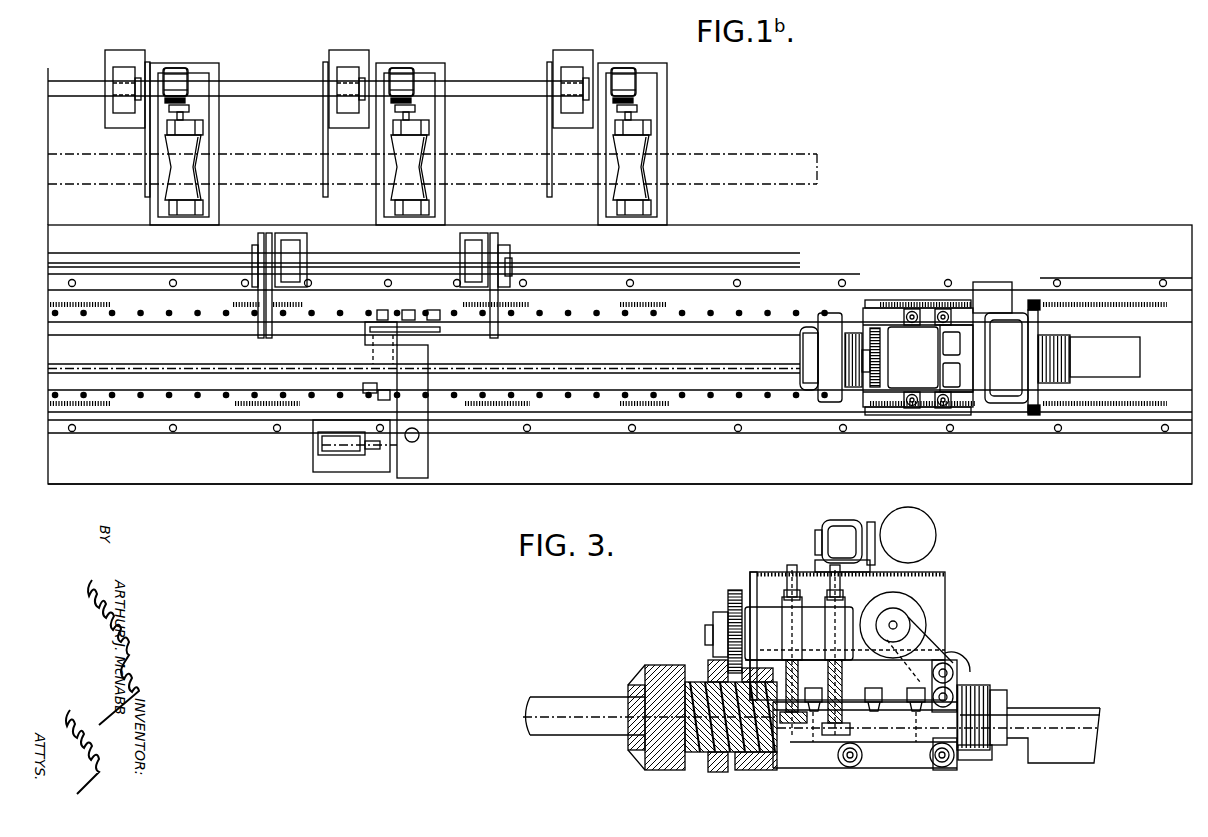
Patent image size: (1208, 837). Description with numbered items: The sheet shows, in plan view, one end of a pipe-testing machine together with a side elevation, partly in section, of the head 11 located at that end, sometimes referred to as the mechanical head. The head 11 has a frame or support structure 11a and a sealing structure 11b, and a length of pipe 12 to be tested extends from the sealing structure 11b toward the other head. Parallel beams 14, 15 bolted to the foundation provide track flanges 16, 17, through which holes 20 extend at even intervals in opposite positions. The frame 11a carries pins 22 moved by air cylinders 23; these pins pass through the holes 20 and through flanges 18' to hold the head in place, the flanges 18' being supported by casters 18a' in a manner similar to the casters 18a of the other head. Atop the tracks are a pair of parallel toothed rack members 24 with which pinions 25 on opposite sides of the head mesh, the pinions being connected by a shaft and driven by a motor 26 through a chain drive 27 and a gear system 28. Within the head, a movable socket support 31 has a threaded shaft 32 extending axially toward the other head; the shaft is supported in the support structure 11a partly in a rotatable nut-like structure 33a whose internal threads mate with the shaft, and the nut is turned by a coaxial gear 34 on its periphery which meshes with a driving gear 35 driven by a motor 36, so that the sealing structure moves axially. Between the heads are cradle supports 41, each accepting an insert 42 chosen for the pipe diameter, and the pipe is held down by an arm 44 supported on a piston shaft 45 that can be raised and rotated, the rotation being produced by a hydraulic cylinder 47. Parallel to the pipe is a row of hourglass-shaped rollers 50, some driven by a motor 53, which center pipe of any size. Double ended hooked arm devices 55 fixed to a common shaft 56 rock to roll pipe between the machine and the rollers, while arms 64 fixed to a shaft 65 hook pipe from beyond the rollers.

In FIG. 1b, the head 11 is at (978, 402).
In FIG. 3, the head 11 is at (735, 577).
In FIG. 1b, the frame or support structure 11a is at (898, 317).
In FIG. 3, the frame or support structure 11a is at (905, 764).
In FIG. 1b, the sealing structure 11b is at (828, 327).
In FIG. 3, the sealing structure 11b is at (660, 663).
In FIG. 1b, the pipe 12 is at (275, 153).
In FIG. 3, the pipe 12 is at (542, 697).
In FIG. 1b, the beam 14 is at (240, 426).
In FIG. 3, the beam 14 is at (1058, 752).
In FIG. 1b, the beam 15 is at (569, 285).
In FIG. 1b, the track flange 16 is at (613, 393).
In FIG. 1b, the track flange 17 is at (662, 317).
In FIG. 3, the flange 18' is at (865, 688).
In FIG. 3, the roller or caster 18a is at (865, 747).
In FIG. 3, the caster 18a' is at (870, 736).
In FIG. 1b, the hole 20 is at (712, 313).
In FIG. 3, the hole 20 is at (780, 767).
In FIG. 3, the pin 22 is at (835, 692).
In FIG. 1b, the air cylinder 23 is at (943, 300).
In FIG. 3, the air cylinder 23 is at (835, 598).
In FIG. 1b, the toothed rack member 24 is at (137, 303).
In FIG. 3, the toothed rack member 24 is at (1063, 708).
In FIG. 1b, the pinion 25 is at (1031, 300).
In FIG. 3, the pinion 25 is at (957, 683).
In FIG. 3, the motor 26 is at (882, 600).
In FIG. 3, the chain drive 27 is at (937, 640).
In FIG. 3, the gear system 28 is at (953, 660).
In FIG. 1b, the movable socket support 31 is at (830, 390).
In FIG. 3, the movable socket support 31 is at (665, 763).
In FIG. 1b, the shaft 32 is at (852, 383).
In FIG. 3, the shaft 32 is at (700, 753).
In FIG. 3, the nut-like structure 33a is at (707, 673).
In FIG. 3, the coaxial gear 34 is at (740, 763).
In FIG. 1b, the driving gear 35 is at (882, 341).
In FIG. 3, the driving gear 35 is at (728, 597).
In FIG. 3, the motor 36 is at (778, 637).
In FIG. 1b, the cradle support 41 is at (420, 317).
In FIG. 1b, the insert 42 is at (445, 358).
In FIG. 1b, the arm 44 is at (422, 407).
In FIG. 1b, the piston shaft 45 is at (412, 442).
In FIG. 1b, the hydraulic cylinder 47 is at (327, 447).
In FIG. 1b, the roller 50 is at (200, 193).
In FIG. 1b, the motor 53 is at (175, 70).
In FIG. 1b, the double ended hooked arm device 55 is at (268, 328).
In FIG. 1b, the shaft 56 is at (183, 255).
In FIG. 1b, the arm 64 is at (145, 140).
In FIG. 1b, the shaft 65 is at (268, 88).